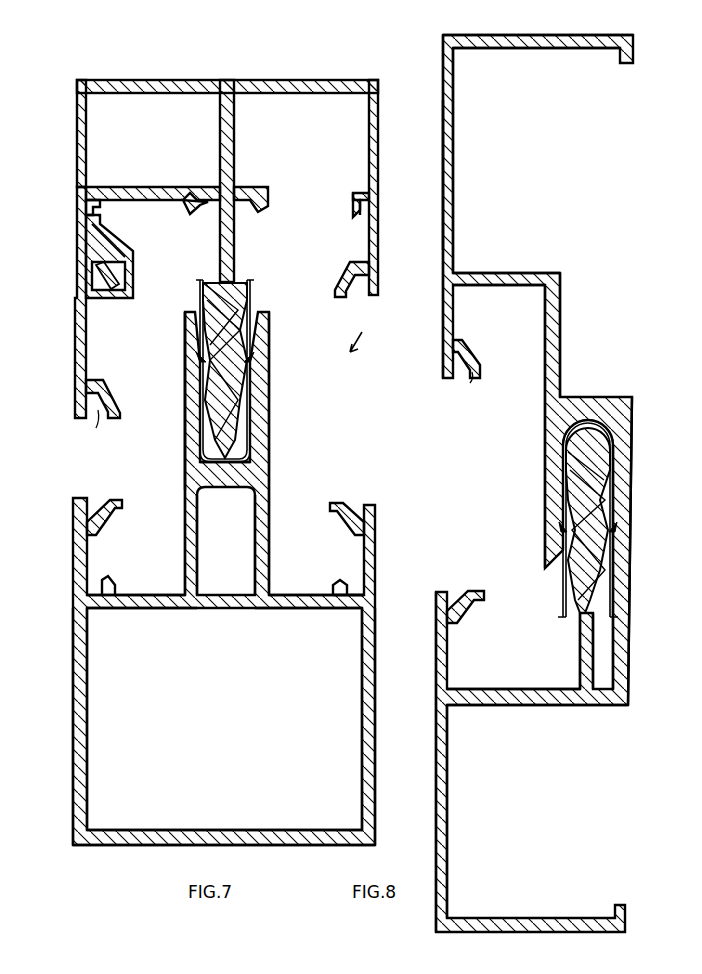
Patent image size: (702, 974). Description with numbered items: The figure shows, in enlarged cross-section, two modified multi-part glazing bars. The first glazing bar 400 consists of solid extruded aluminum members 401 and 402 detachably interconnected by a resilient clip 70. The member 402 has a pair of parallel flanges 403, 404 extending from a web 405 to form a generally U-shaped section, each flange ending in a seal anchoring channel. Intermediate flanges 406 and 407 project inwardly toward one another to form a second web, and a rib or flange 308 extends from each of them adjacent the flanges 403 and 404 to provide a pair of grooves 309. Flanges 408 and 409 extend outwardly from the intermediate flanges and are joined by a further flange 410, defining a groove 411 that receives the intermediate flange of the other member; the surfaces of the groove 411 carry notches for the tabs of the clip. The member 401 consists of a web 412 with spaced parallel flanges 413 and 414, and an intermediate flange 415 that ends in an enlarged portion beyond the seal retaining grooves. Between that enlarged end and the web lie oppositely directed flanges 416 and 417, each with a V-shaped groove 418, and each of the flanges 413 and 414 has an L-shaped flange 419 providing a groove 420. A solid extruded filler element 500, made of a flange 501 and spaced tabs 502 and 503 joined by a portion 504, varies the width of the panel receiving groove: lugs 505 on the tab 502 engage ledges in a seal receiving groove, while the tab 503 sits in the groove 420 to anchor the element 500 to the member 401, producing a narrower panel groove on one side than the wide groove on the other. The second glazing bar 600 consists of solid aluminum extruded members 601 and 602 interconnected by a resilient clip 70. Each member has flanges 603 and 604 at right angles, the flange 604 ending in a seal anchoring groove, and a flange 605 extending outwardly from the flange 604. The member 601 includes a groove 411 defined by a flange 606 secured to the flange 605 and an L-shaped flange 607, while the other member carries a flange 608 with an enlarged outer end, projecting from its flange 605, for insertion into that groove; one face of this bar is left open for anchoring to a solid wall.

In FIG. 7, the resilient clip 70 is at (245, 396).
In FIG. 8, the resilient clip 70 is at (560, 462).
In FIG. 7, the rib or flange 308 is at (340, 586).
In FIG. 7, the grooves 309 is at (350, 590).
In FIG. 7, the glazing bar 400 is at (326, 411).
In FIG. 7, the solid extruded member 401 is at (378, 170).
In FIG. 7, the solid extruded member 402 is at (381, 669).
In FIG. 7, the flange 403 is at (84, 774).
In FIG. 7, the flange 404 is at (366, 774).
In FIG. 7, the web 405 is at (193, 832).
In FIG. 7, the intermediate flange 406 is at (120, 602).
In FIG. 7, the intermediate flange 407 is at (296, 606).
In FIG. 7, the flange 408 is at (185, 540).
In FIG. 7, the flange 409 is at (269, 548).
In FIG. 7, the further flange 410 is at (252, 478).
In FIG. 7, the groove 411 is at (200, 399).
In FIG. 8, the groove 411 is at (608, 420).
In FIG. 7, the web 412 is at (291, 86).
In FIG. 7, the flange 413 is at (77, 150).
In FIG. 7, the flange 414 is at (369, 145).
In FIG. 7, the intermediate flange 415 is at (234, 140).
In FIG. 7, the flange 416 is at (190, 186).
In FIG. 7, the flange 417 is at (259, 187).
In FIG. 7, the V-shaped groove 418 is at (192, 208).
In FIG. 7, the L-shaped flange 419 is at (352, 202).
In FIG. 7, the groove 420 is at (370, 208).
In FIG. 7, the solid extruded element 500 is at (86, 346).
In FIG. 7, the flange 501 is at (75, 322).
In FIG. 7, the tab 502 is at (92, 268).
In FIG. 7, the tab 503 is at (100, 206).
In FIG. 7, the portion 504 is at (133, 266).
In FIG. 7, the lugs 505 is at (96, 284).
In FIG. 8, the glazing bar 600 is at (518, 439).
In FIG. 8, the solid aluminum extruded member 601 is at (455, 134).
In FIG. 8, the solid aluminum extruded member 602 is at (451, 793).
In FIG. 8, the flange 603 is at (521, 40).
In FIG. 8, the flange 604 is at (456, 174).
In FIG. 8, the flange 605 is at (492, 276).
In FIG. 8, the flange 606 is at (561, 332).
In FIG. 8, the L-shaped flange 607 is at (633, 442).
In FIG. 8, the flange 608 is at (580, 642).